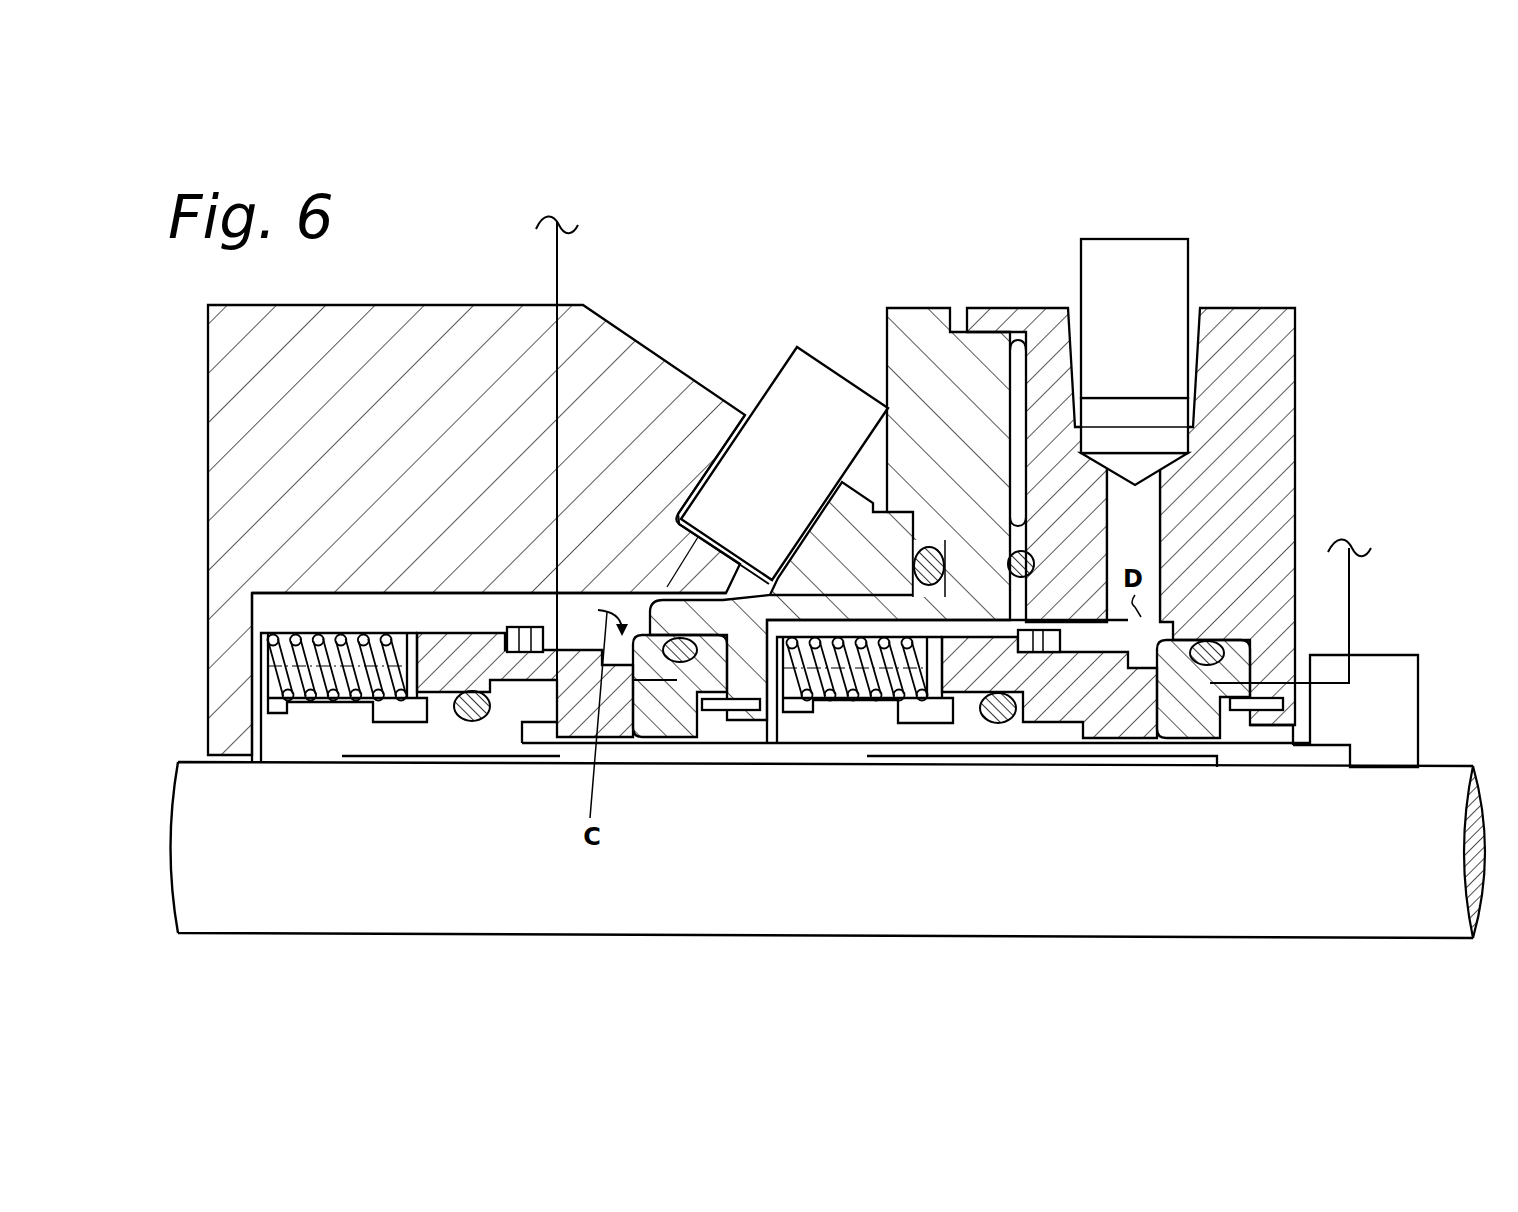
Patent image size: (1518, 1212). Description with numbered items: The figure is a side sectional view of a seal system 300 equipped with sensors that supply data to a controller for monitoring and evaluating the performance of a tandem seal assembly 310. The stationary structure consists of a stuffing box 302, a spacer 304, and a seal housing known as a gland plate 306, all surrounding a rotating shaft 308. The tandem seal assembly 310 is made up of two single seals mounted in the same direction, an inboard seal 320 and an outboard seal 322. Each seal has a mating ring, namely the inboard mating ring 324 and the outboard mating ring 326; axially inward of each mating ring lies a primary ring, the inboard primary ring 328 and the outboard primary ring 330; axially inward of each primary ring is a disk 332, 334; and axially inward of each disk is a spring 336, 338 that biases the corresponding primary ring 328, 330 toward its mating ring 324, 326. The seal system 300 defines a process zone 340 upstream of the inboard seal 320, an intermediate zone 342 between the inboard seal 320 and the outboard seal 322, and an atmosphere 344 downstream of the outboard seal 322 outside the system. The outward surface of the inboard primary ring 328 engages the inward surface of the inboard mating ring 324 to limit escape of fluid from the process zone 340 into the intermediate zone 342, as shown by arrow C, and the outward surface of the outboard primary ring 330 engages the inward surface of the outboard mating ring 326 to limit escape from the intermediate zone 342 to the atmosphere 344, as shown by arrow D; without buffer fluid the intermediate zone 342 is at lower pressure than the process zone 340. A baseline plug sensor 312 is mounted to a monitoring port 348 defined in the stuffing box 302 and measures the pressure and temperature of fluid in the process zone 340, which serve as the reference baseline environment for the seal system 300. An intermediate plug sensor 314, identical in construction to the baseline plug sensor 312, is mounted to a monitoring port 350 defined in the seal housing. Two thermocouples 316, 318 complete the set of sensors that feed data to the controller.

The seal system 300 is at (1402, 336).
The stuffing box 302 is at (568, 315).
The spacer 304 is at (911, 320).
The gland plate 306 is at (1240, 315).
The rotating shaft 308 is at (1340, 912).
The tandem seal assembly 310 is at (1033, 732).
The baseline plug sensor 312 is at (760, 420).
The intermediate plug sensor 314 is at (1170, 240).
The thermocouple 316 is at (686, 755).
The thermocouple 318 is at (1222, 749).
The inboard seal 320 is at (558, 744).
The outboard seal 322 is at (1130, 742).
The inboard mating ring 324 is at (686, 724).
The outboard mating ring 326 is at (1212, 666).
The inboard primary ring 328 is at (490, 714).
The outboard primary ring 330 is at (1049, 751).
The disk 332 is at (410, 682).
The disk 334 is at (932, 680).
The spring 336 is at (320, 690).
The spring 338 is at (830, 690).
The process zone 340 is at (370, 626).
The intermediate zone 342 is at (756, 712).
The atmosphere 344 is at (1370, 626).
The monitoring port 348 is at (706, 466).
The monitoring port 350 is at (1068, 312).